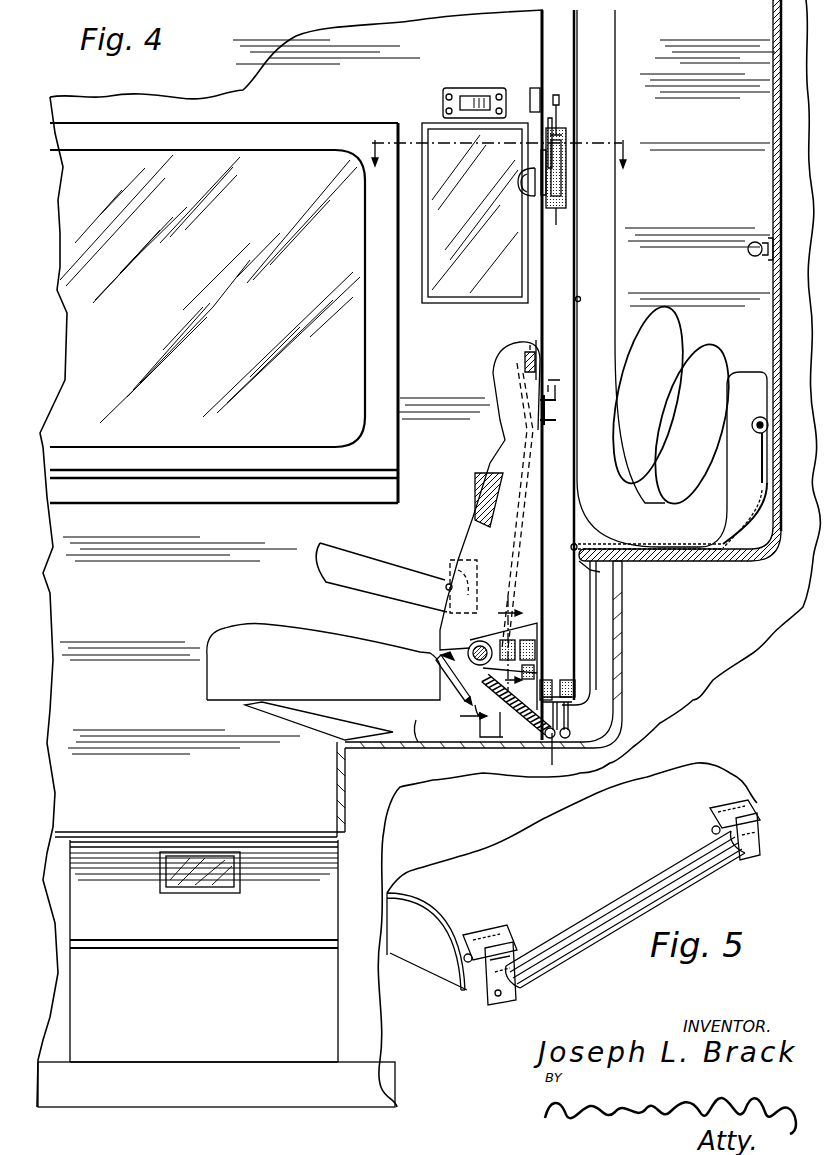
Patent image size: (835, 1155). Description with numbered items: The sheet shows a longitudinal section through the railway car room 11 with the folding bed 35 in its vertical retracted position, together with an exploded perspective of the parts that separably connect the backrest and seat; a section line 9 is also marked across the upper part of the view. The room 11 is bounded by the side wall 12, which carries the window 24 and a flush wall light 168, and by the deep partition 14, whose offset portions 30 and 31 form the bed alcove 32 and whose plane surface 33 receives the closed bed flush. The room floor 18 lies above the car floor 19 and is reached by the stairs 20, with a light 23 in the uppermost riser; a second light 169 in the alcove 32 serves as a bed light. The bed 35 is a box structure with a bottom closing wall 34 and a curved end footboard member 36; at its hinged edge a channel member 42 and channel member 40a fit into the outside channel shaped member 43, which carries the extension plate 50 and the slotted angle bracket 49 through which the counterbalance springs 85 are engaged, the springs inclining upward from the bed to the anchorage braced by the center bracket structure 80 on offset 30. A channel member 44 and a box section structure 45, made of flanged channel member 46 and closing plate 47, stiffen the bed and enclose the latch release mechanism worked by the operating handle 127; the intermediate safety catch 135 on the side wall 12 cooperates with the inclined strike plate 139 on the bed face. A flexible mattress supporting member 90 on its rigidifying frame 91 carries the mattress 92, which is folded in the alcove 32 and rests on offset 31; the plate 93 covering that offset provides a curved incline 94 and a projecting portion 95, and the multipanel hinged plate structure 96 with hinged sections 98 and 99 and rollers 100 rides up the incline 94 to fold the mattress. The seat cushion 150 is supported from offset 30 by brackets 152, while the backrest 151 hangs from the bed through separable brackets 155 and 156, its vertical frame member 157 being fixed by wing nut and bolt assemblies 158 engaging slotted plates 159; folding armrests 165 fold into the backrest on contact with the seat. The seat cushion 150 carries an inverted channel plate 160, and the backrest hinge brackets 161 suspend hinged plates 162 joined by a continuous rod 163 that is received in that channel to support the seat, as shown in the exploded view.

In FIG. 4, the section line 9- 9 is at (499, 169).
In FIG. 4, the room 11 is at (518, 646).
In FIG. 4, the side wall 12 is at (82, 598).
In FIG. 4, the cross partition 14 is at (772, 152).
In FIG. 4, the floor 18 is at (68, 830).
In FIG. 4, the car floor 19 is at (356, 1065).
In FIG. 4, the stairs 20 is at (265, 947).
In FIG. 4, the light 23 is at (217, 885).
In FIG. 4, the window 24 is at (224, 313).
In FIG. 4, the offset portion 30 is at (405, 727).
In FIG. 4, the offset portion 31 is at (655, 561).
In FIG. 4, the bed alcove 32 is at (641, 175).
In FIG. 4, the plane surface 33 is at (541, 36).
In FIG. 4, the bottom closing wall 34 is at (541, 299).
In FIG. 4, the folding bed 35 is at (540, 327).
In FIG. 4, the end footboard member 36 is at (600, 44).
In FIG. 4, the channel member 40a is at (553, 684).
In FIG. 4, the channel member 42 is at (578, 690).
In FIG. 4, the outside channel shaped member 43 is at (550, 745).
In FIG. 4, the channel member 44 is at (557, 382).
In FIG. 4, the box section structure 45 is at (575, 168).
In FIG. 4, the flanged channel member 46 is at (556, 225).
In FIG. 4, the closing plate 47 is at (567, 206).
In FIG. 4, the angle bracket 49 is at (580, 700).
In FIG. 4, the extension plate 50 is at (570, 730).
In FIG. 4, the center bracket structure 80 is at (472, 721).
In FIG. 4, the counterbalance springs 85 is at (525, 732).
In FIG. 4, the flexible mattress supporting member 90 is at (574, 337).
In FIG. 4, the rigidifying frame 91 is at (590, 672).
In FIG. 4, the mattress 92 is at (610, 212).
In FIG. 4, the plate 93 is at (686, 561).
In FIG. 4, the curved incline 94 is at (772, 535).
In FIG. 4, the projecting portion 95 is at (624, 592).
In FIG. 4, the multipanel hinged plate structure 96 is at (668, 543).
In FIG. 4, the hinged section 98 is at (748, 522).
In FIG. 4, the hinged section 99 is at (761, 462).
In FIG. 4, the rollers 100 is at (757, 418).
In FIG. 4, the operating handle 127 is at (512, 194).
In FIG. 4, the intermediate safety catch 135 is at (480, 100).
In FIG. 4, the inclined strike plate 139 is at (531, 95).
In FIG. 4, the seat cushion 150 is at (230, 630).
In FIG. 4, the backrest 151 is at (490, 465).
In FIG. 4, the brackets 152 is at (300, 716).
In FIG. 4, the bracket 155 is at (561, 410).
In FIG. 4, the bracket 156 is at (536, 392).
In FIG. 4, the vertical frame member 157 is at (500, 520).
In FIG. 4, the wing nut and bolt assemblies 158 is at (535, 652).
In FIG. 4, the slotted plates 159 is at (530, 634).
In FIG. 4, the plate 160 is at (440, 702).
In FIG. 5, the plate 160 is at (587, 910).
In FIG. 5, the hinge brackets 161 is at (493, 930).
In FIG. 4, the hinged plates 162 is at (440, 652).
In FIG. 5, the hinged plates 162 is at (486, 990).
In FIG. 5, the continuous rod 163 is at (650, 898).
In FIG. 4, the folding armrests 165 is at (366, 582).
In FIG. 4, the wall light 168 is at (475, 213).
In FIG. 4, the light 169 is at (752, 255).